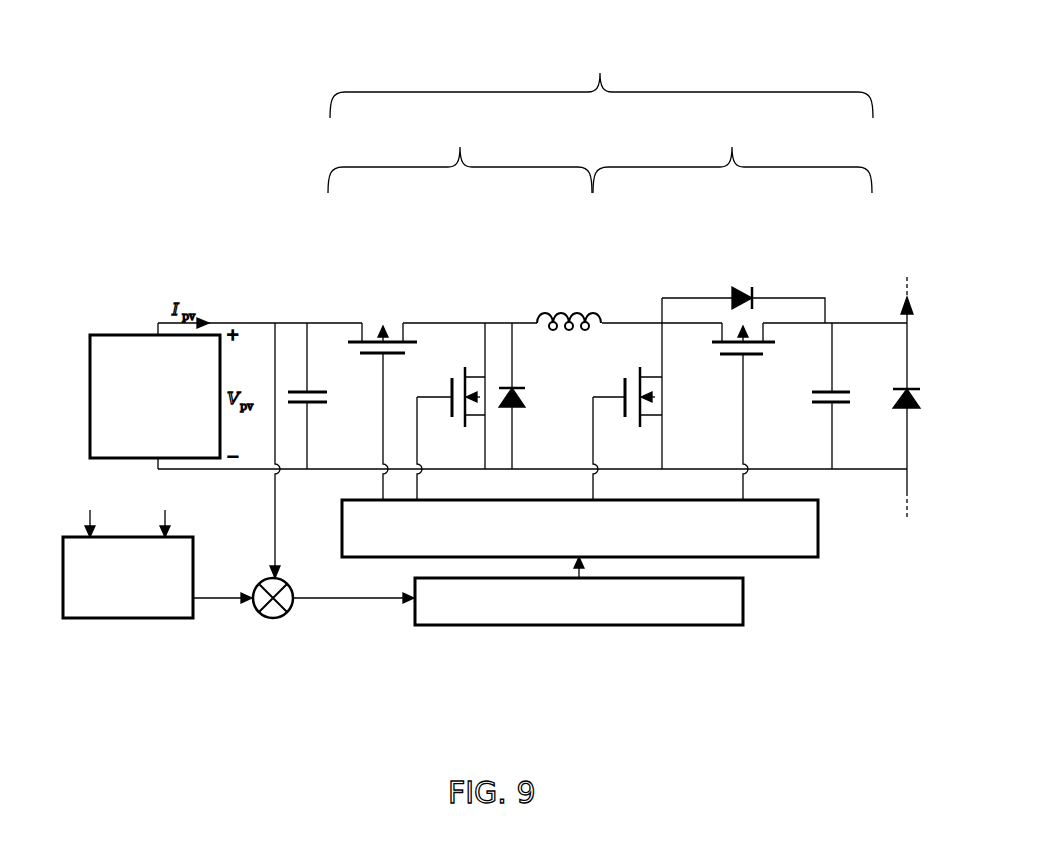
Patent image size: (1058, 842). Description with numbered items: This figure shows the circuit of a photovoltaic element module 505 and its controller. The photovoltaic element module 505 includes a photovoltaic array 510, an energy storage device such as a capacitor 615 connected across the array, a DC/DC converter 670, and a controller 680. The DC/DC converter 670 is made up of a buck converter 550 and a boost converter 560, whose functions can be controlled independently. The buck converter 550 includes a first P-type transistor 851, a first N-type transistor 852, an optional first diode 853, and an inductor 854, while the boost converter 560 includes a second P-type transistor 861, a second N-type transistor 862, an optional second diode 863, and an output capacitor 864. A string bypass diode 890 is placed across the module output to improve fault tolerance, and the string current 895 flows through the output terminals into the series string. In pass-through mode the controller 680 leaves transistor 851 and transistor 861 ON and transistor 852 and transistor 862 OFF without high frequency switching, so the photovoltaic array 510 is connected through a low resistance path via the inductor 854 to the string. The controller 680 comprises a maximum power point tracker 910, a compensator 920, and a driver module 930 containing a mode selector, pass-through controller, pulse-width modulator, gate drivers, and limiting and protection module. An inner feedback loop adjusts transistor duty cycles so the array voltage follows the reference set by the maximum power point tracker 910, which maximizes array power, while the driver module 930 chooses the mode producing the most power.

The photovoltaic element module 505 is at (128, 258).
The photovoltaic array 510 is at (155, 396).
The capacitor 615 is at (307, 373).
The transistor P1 851 is at (373, 322).
The transistor N1 852 is at (465, 375).
The diode D1 853 is at (508, 355).
The inductor L 854 is at (562, 312).
The transistor N2 862 is at (638, 375).
The diode D2 863 is at (733, 293).
The transistor P2 861 is at (742, 357).
The capacitor C2 864 is at (827, 405).
The string bypass diode D3 890 is at (902, 410).
The string current 895 is at (905, 290).
The DC/DC converter 670 is at (605, 73).
The buck converter 550 is at (473, 148).
The boost converter 560 is at (743, 148).
The controller 680 is at (780, 714).
The maximum power point tracker 910 is at (128, 620).
The compensator 920 is at (512, 615).
The driver module 930 is at (748, 558).